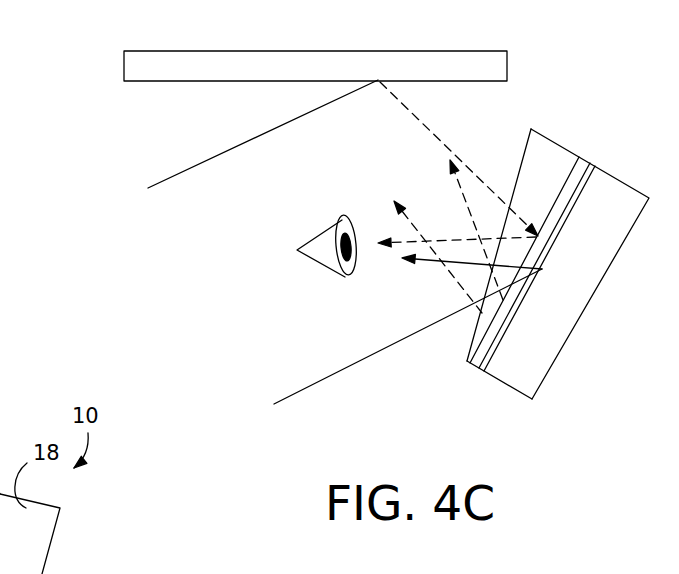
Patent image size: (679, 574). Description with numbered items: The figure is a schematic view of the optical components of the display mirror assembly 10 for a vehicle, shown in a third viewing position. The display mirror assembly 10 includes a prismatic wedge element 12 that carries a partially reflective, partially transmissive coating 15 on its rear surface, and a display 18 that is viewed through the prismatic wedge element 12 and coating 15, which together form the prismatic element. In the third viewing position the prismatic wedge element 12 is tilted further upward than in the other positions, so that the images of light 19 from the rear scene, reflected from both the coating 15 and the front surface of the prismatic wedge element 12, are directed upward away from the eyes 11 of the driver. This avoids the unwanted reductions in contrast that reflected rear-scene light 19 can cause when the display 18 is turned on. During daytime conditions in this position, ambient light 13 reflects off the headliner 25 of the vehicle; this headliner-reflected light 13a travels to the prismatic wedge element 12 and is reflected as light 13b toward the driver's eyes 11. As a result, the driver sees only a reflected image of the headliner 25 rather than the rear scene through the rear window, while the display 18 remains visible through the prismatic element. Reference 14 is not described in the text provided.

The display mirror assembly 10 is at (642, 145).
The eyes of a viewer 11 is at (343, 220).
The prismatic wedge element 12 is at (555, 158).
The ambient light 13 is at (223, 153).
The light reflected off headliner 13a is at (438, 142).
The light reflected from prismatic element 13b is at (458, 237).
The rear scene light ray to eye 14 is at (433, 262).
The partially reflective, partially transmissive coating 15 is at (477, 373).
The display 18 is at (523, 382).
The light from rear scene 19 is at (355, 370).
The headliner 25 is at (406, 57).